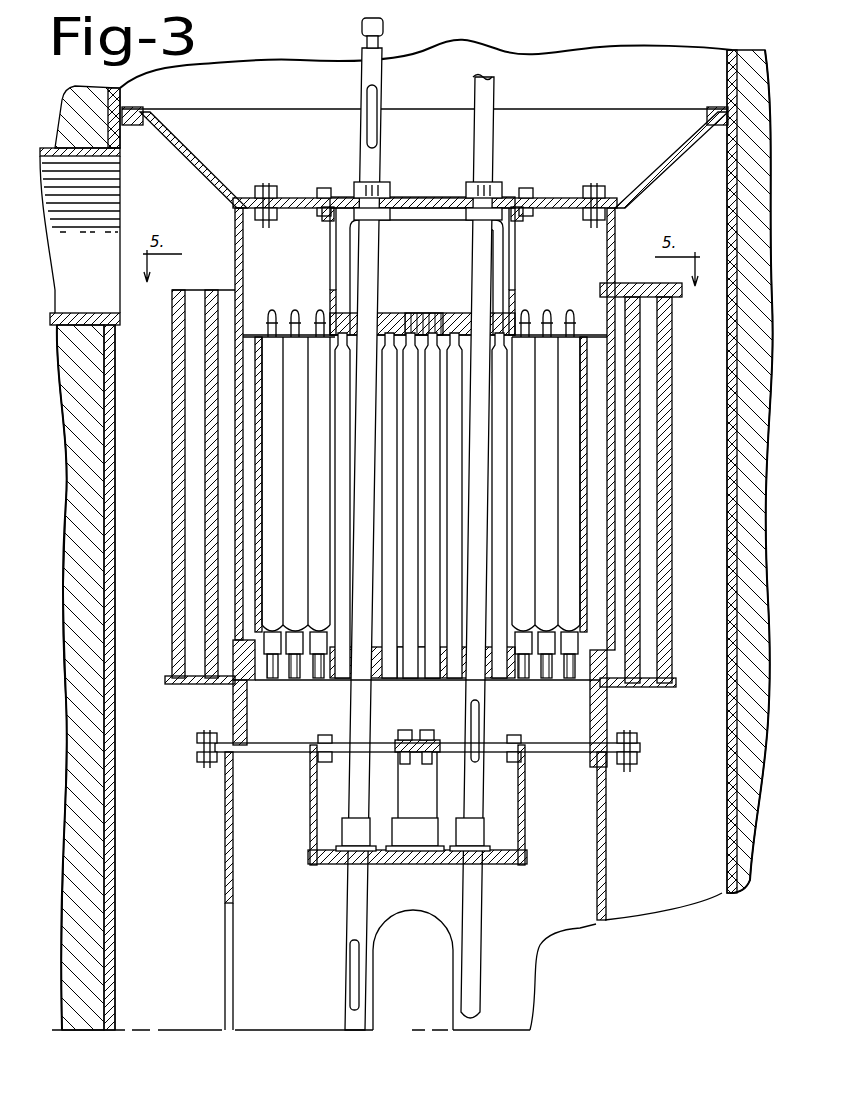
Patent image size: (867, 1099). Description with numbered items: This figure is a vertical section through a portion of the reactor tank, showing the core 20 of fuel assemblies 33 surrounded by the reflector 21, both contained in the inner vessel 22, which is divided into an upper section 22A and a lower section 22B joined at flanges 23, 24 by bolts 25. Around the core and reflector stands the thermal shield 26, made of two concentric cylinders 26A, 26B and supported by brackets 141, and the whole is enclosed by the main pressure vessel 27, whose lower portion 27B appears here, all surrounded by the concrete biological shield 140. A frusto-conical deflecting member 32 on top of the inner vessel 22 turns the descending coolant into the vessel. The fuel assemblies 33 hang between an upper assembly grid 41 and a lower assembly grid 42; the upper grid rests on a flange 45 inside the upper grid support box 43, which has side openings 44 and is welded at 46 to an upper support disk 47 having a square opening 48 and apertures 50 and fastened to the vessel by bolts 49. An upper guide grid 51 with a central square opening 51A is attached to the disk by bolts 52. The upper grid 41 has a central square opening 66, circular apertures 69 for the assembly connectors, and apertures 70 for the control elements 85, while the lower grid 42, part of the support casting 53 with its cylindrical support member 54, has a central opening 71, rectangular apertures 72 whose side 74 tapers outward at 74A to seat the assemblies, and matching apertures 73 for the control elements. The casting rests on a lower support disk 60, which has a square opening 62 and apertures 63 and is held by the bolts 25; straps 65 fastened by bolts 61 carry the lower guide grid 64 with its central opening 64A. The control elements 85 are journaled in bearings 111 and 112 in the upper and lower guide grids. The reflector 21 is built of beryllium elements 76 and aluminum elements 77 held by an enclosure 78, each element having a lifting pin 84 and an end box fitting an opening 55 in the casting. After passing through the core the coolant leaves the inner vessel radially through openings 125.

The core 20 is at (417, 513).
The reflector 21 is at (425, 484).
The inner vessel 22 is at (614, 248).
The upper section 22A is at (233, 545).
The lower section 22B is at (225, 880).
The flange 23 is at (637, 750).
The flange 24 is at (637, 757).
The bolts 25 is at (638, 735).
The thermal shield 26 is at (675, 435).
The concentric cylinder 26A is at (175, 527).
The concentric cylinder 26B is at (208, 482).
The main pressure vessel 27 is at (121, 417).
The lower portion 27B is at (116, 448).
The frusto-conical deflecting member 32 is at (182, 152).
The fuel assemblies 33 is at (422, 505).
The upper assembly grid 41 is at (421, 305).
The lower assembly grid 42 is at (421, 688).
The upper grid support box 43 is at (330, 270).
The openings 44 is at (350, 250).
The flange 45 is at (350, 318).
The weld 46 is at (325, 220).
The upper support disk 47 is at (282, 184).
The square opening 48 is at (515, 200).
The bolts 49 is at (258, 194).
The apertures 50 is at (295, 222).
The upper guide grid 51 is at (338, 198).
The central square opening 51A is at (430, 203).
The bolts 52 is at (318, 195).
The support casting 53 is at (228, 697).
The cylindrical support member 54 is at (247, 707).
The opening 55 is at (310, 682).
The lower support disk 60 is at (197, 745).
The bolts 61 is at (315, 758).
The square opening 62 is at (510, 743).
The apertures 63 is at (275, 745).
The lower guide grid 64 is at (442, 874).
The central square opening 64A is at (425, 866).
The straps 65 is at (310, 805).
The central square opening 66 is at (450, 316).
The circular apertures 69 is at (452, 312).
The apertures 70 is at (378, 312).
The central opening 71 is at (437, 670).
The rectangular apertures 72 is at (385, 680).
The aperture 73 is at (480, 685).
The side 74 is at (375, 680).
The tapered portion 74A is at (383, 647).
The beryllium elements 76 is at (421, 452).
The aluminum elements 77 is at (421, 461).
The enclosure 78 is at (419, 436).
The lifting pin 84 is at (287, 315).
The control elements 85 is at (427, 547).
The bearing 111 is at (381, 185).
The bearing 112 is at (385, 822).
The openings 125 is at (225, 958).
The biological shield 140 is at (68, 685).
The brackets 141 is at (660, 687).